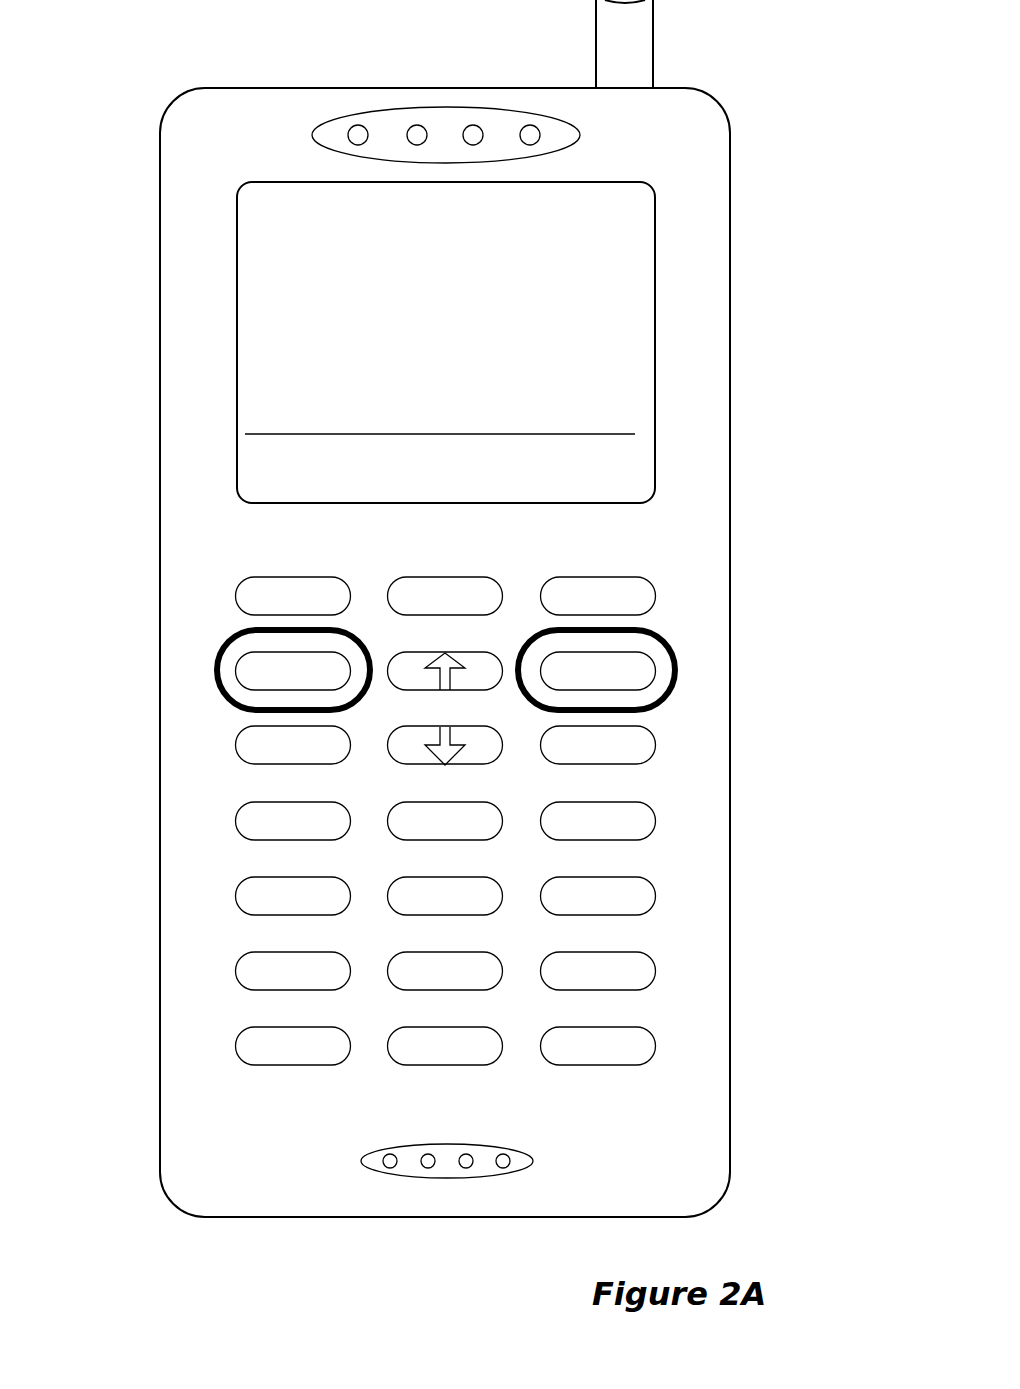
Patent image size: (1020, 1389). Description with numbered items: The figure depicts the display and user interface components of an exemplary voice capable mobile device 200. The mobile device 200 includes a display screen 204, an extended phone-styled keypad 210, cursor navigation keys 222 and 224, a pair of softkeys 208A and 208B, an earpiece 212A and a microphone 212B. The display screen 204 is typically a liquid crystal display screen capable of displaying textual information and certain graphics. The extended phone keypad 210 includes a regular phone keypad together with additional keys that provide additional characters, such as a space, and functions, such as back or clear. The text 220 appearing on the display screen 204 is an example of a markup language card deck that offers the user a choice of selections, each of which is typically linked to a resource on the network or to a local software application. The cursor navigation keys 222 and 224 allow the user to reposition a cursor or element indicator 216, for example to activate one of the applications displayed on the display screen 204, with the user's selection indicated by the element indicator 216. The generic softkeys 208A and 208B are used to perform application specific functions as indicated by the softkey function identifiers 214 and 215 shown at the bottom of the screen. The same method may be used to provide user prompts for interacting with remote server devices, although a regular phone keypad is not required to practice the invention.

The mobile device 200 is at (729, 213).
The display screen 204 is at (653, 410).
The softkey 208A is at (216, 672).
The softkey 208B is at (675, 668).
The extended phone-styled keypad 210 is at (647, 533).
The earpiece 212A is at (578, 138).
The microphone 212B is at (530, 1152).
The softkey function identifier 214 is at (318, 476).
The softkey function identifier 215 is at (545, 480).
The element indicator 216 is at (283, 250).
The text 220 is at (424, 278).
The cursor navigation key 222 is at (447, 653).
The cursor navigation key 224 is at (455, 770).